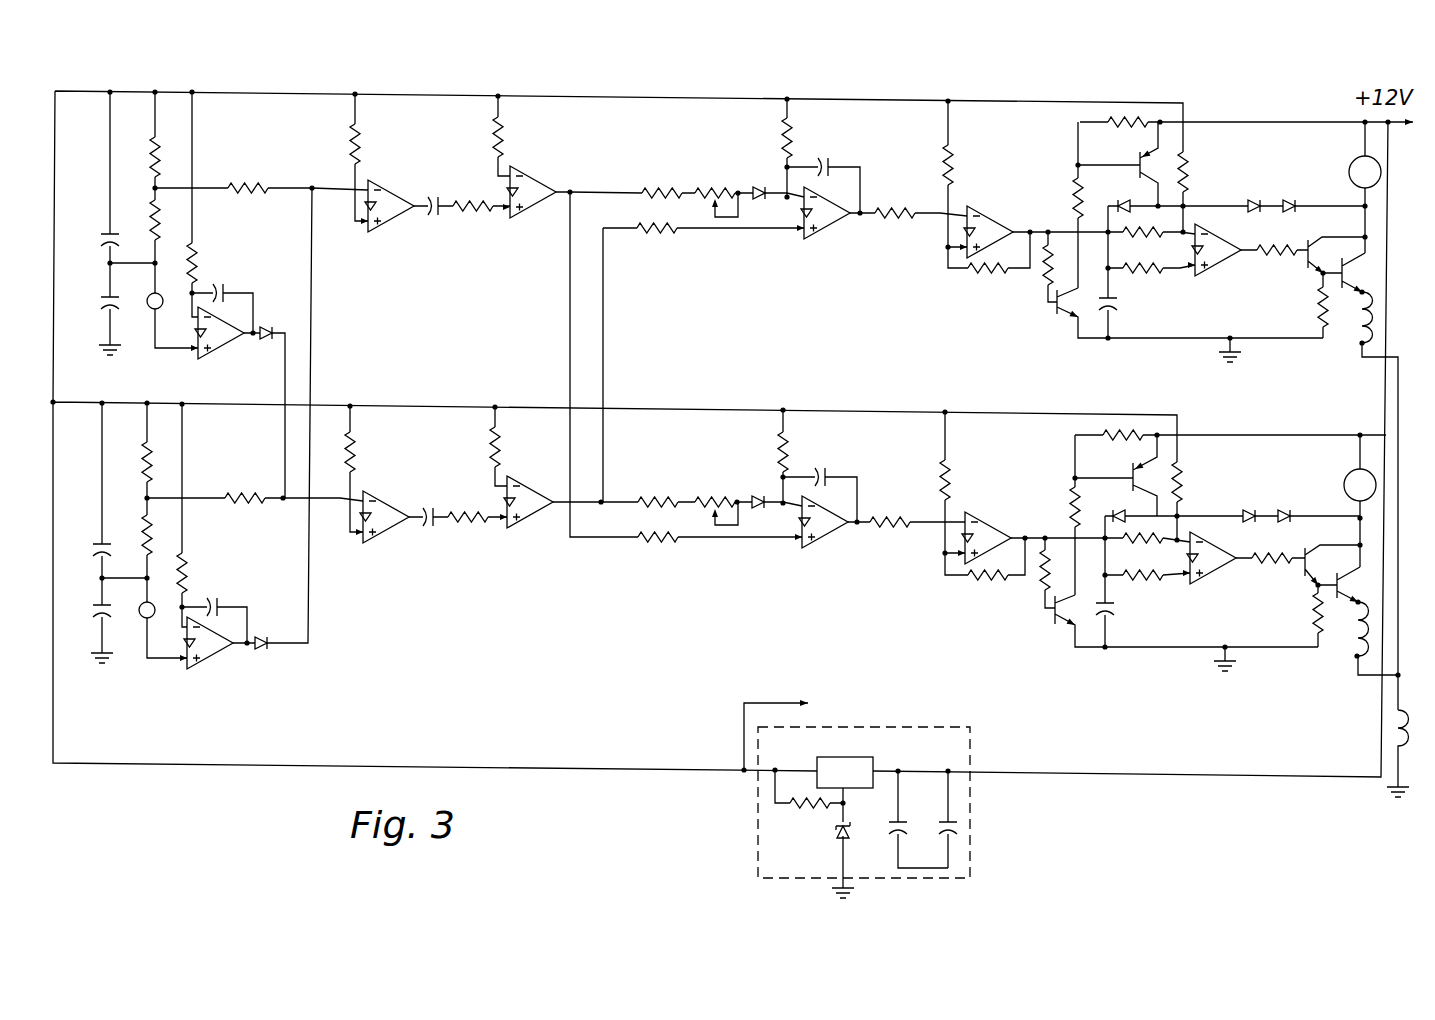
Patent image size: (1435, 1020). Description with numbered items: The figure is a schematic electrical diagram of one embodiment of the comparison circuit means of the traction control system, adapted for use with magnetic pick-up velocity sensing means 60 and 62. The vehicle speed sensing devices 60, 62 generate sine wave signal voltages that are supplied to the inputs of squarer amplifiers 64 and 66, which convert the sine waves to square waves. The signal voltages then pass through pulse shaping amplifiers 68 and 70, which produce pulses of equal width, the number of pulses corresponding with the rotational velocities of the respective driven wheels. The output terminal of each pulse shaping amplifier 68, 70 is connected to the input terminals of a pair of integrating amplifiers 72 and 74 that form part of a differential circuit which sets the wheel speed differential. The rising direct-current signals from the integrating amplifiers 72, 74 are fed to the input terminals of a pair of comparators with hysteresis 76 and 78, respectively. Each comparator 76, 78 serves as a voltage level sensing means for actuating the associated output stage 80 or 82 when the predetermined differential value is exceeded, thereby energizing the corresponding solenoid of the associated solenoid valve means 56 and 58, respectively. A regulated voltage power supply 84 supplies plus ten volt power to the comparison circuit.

The solenoid valve means 56 is at (1350, 172).
The solenoid valve means 58 is at (1350, 484).
The velocity sensing means 60 is at (147, 305).
The velocity sensing means 62 is at (139, 616).
The squarer amplifier 64 is at (387, 202).
The squarer amplifier 66 is at (385, 522).
The pulse shaping amplifier 68 is at (535, 180).
The pulse shaping amplifier 70 is at (527, 488).
The integrating amplifier 72 is at (834, 230).
The integrating amplifier 74 is at (832, 525).
The comparator with hysteresis 76 is at (985, 223).
The comparator with hysteresis 78 is at (978, 527).
The output stage 80 is at (1237, 77).
The output stage 82 is at (1125, 697).
The regulated voltage power supply 84 is at (968, 730).